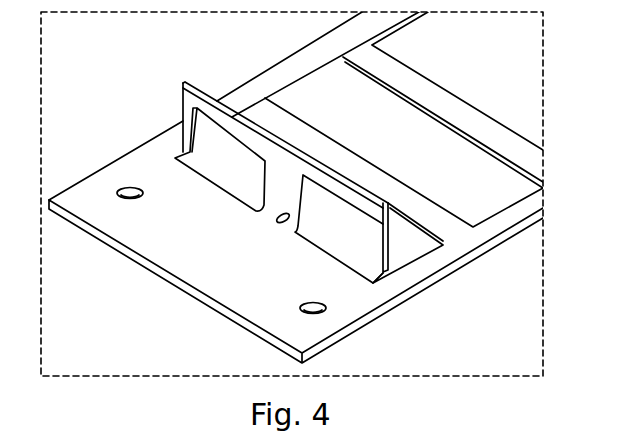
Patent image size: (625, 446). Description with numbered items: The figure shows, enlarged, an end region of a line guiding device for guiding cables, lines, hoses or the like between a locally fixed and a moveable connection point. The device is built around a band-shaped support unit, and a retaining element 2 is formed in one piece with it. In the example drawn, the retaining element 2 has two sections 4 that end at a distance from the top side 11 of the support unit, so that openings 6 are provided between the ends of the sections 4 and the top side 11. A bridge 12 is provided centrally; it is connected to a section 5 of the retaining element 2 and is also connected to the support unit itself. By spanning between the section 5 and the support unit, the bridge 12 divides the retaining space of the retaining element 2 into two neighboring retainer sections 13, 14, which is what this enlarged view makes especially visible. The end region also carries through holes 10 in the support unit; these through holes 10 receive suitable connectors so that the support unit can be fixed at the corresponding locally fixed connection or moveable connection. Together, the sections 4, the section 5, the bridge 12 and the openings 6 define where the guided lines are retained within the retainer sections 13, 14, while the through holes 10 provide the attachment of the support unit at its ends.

The retaining element 2 is at (177, 80).
The section 4 is at (183, 135).
The section 5 is at (228, 116).
The opening 6 is at (150, 167).
The through hole 10 is at (130, 203).
The top side 11 is at (360, 306).
The bridge 12 is at (273, 221).
The retainer section 13 is at (233, 170).
The retainer section 14 is at (343, 236).